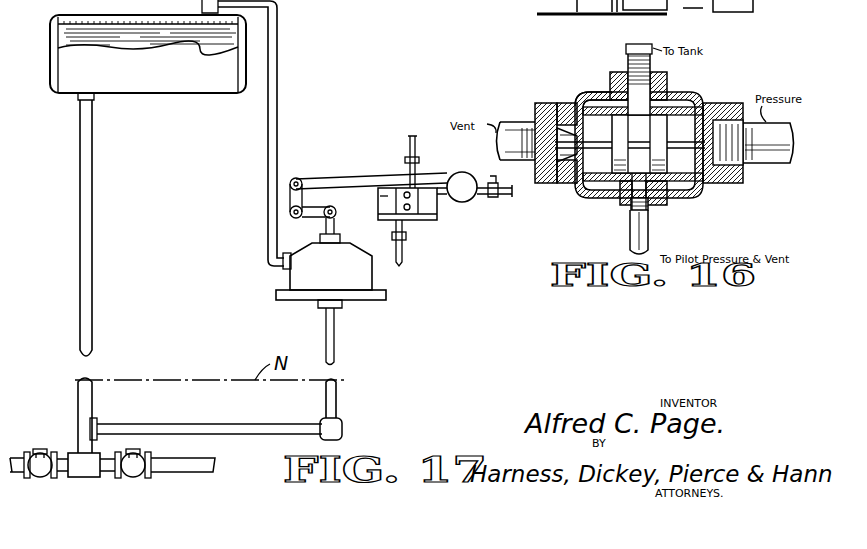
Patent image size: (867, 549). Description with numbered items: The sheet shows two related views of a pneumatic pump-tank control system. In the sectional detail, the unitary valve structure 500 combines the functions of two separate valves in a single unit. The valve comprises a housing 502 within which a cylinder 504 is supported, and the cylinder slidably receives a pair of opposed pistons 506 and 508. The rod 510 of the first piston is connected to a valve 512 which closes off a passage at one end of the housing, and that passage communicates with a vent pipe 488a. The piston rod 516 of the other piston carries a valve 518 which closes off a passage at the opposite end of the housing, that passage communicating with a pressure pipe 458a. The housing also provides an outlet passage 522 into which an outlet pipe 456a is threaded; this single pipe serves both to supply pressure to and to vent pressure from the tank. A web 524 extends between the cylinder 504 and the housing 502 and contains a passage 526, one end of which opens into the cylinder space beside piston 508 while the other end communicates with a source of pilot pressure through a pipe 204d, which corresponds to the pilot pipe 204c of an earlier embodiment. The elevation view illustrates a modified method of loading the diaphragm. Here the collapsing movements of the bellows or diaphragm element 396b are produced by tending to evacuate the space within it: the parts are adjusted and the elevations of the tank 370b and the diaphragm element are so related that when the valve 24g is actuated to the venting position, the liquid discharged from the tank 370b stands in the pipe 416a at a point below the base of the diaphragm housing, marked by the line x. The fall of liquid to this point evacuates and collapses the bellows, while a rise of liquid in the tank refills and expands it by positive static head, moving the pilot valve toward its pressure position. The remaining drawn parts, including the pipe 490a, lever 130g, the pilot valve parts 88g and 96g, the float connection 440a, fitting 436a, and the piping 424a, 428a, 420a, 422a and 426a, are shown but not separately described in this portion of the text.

In FIG. 17, the tank 370b is at (153, 92).
In FIG. 17, the pipe 416a is at (90, 318).
In FIG. 17, the supply pipe 490a is at (277, 97).
In FIG. 17, the bellows or diaphragm element 396b is at (327, 304).
In FIG. 17, the lever 130g is at (318, 182).
In FIG. 17, the pipe 204c is at (439, 205).
In FIG. 17, the valve stem 88g is at (409, 143).
In FIG. 17, the valve 24g is at (383, 203).
In FIG. 17, the valve pin 96g is at (404, 251).
In FIG. 17, the float ball and pipe 440a is at (501, 197).
In FIG. 17, the pipe fitting 436a is at (492, 180).
In FIG. 17, the vertical pipe 424a is at (78, 452).
In FIG. 17, the horizontal pipe 428a is at (143, 428).
In FIG. 17, the inlet valve 420a is at (66, 474).
In FIG. 17, the pipe nipple 422a is at (110, 475).
In FIG. 17, the outlet valve 426a is at (142, 459).
In FIG. 16, the unitary valve structure 500 is at (686, 92).
In FIG. 16, the housing 502 is at (572, 108).
In FIG. 16, the cylinder 504 is at (592, 105).
In FIG. 16, the piston 506 is at (616, 182).
In FIG. 16, the piston 508 is at (687, 188).
In FIG. 16, the rod 510 is at (506, 191).
In FIG. 16, the valve 512 is at (543, 118).
In FIG. 16, the piston rod 516 is at (708, 108).
In FIG. 16, the valve 518 is at (727, 188).
In FIG. 16, the outlet passage 522 is at (616, 72).
In FIG. 16, the web 524 is at (631, 240).
In FIG. 16, the passage 526 is at (662, 206).
In FIG. 16, the outlet pipe 456a is at (647, 50).
In FIG. 16, the vent pipe 488a is at (503, 128).
In FIG. 16, the pressure pipe 458a is at (760, 163).
In FIG. 16, the pipe 204d is at (648, 232).